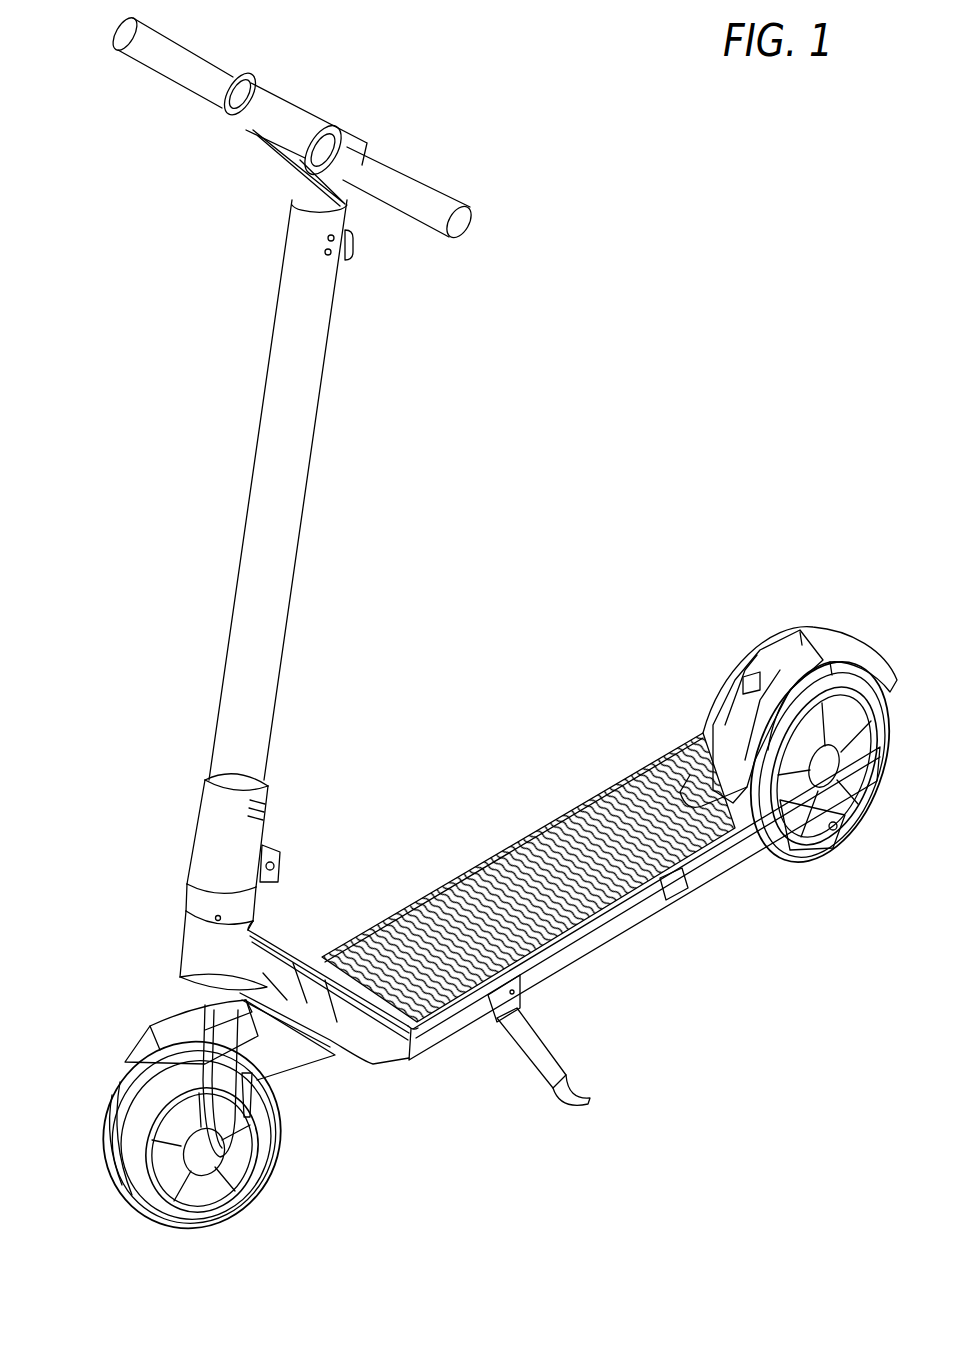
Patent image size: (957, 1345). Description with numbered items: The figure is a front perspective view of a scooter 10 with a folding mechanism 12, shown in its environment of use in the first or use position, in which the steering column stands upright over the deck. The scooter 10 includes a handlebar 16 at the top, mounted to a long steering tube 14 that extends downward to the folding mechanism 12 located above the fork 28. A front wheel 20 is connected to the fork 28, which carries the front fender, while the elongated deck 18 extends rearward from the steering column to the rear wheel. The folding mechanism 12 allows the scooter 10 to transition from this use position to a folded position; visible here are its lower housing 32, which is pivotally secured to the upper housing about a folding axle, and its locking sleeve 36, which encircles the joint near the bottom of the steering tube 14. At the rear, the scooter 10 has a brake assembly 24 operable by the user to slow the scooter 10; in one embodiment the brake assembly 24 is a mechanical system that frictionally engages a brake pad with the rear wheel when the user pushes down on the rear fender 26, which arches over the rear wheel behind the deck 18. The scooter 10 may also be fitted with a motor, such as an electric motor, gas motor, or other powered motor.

The scooter 10 is at (722, 336).
The folding mechanism 12 is at (132, 873).
The steering tube 14 is at (274, 457).
The handlebar 16 is at (423, 187).
The deck 18 is at (487, 887).
The front wheel 20 is at (178, 1218).
The brake assembly 24 is at (817, 627).
The rear fender 26 is at (850, 643).
The fork 28 is at (158, 1013).
The lower housing 32 is at (196, 901).
The locking sleeve 36 is at (208, 835).